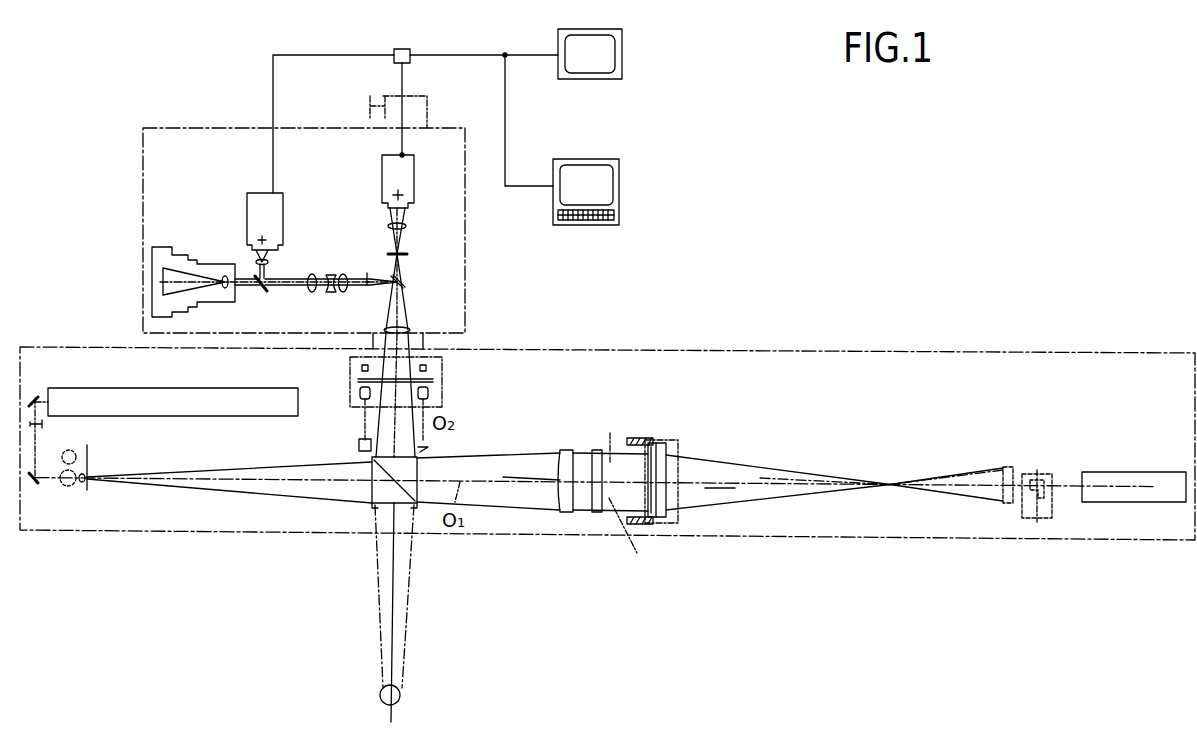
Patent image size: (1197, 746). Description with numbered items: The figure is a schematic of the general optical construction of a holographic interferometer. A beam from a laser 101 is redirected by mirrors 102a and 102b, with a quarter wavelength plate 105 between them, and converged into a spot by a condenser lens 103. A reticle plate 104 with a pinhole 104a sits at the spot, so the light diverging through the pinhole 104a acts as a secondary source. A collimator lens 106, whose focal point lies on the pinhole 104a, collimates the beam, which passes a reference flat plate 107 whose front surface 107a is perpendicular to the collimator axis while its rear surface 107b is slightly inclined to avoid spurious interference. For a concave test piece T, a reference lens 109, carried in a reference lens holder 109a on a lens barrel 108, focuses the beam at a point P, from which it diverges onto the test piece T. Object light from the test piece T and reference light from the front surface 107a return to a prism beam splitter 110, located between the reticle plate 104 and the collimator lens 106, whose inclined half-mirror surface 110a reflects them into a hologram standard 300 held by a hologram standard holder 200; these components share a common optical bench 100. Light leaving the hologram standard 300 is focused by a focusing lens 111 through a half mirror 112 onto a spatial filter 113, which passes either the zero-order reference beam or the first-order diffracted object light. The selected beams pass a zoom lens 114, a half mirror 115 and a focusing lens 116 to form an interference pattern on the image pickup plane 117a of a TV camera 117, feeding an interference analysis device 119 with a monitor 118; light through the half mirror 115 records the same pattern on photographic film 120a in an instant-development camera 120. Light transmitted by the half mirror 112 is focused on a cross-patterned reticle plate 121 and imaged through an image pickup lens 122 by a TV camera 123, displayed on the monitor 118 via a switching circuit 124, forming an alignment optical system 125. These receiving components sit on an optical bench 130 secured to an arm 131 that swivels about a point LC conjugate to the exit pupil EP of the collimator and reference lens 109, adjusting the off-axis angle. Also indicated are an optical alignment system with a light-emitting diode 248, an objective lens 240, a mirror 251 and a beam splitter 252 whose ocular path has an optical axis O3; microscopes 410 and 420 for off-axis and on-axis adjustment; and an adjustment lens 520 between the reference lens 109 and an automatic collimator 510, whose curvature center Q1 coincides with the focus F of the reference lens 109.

The optical bench 100 is at (629, 349).
The laser 101 is at (240, 388).
The mirror 102a is at (36, 396).
The mirror 102b is at (38, 490).
The condenser lens 103 is at (80, 486).
The reticle plate 104 is at (89, 455).
The pinhole 104a is at (90, 477).
The quarter wavelength plate 105 is at (43, 425).
The collimator lens 106 is at (565, 513).
The reference flat plate 107 is at (597, 513).
The front surface 107a is at (568, 450).
The rear surface 107b is at (619, 435).
The lens barrel 108 is at (640, 438).
The reference lens 109 is at (658, 520).
The reference lens holder 109a is at (660, 440).
The prism beam splitter 110 is at (376, 507).
The half-mirror surface 110a is at (412, 505).
The focusing lens 111 is at (407, 328).
The half mirror 112 is at (404, 285).
The spatial filter 113 is at (367, 290).
The zoom lens 114 is at (330, 272).
The half mirror 115 is at (264, 292).
The focusing lens 116 is at (268, 262).
The TV camera 117 is at (283, 214).
The image pickup plane 117a is at (270, 240).
The monitor 118 is at (595, 68).
The interference analysis device 119 is at (586, 168).
The instant-development type camera 120 is at (208, 298).
The photographic film 120a is at (170, 262).
The reticle plate 121 is at (406, 254).
The image pickup lens 122 is at (404, 226).
The TV camera 123 is at (414, 182).
The switching circuit 124 is at (407, 54).
The alignment optical system 125 is at (470, 224).
The optical bench 130 is at (178, 125).
The arm 131 is at (432, 84).
The hologram standard holder 200 is at (445, 393).
The objective lens 240 is at (358, 395).
The light-emitting diode 248 is at (360, 368).
The mirror 251 is at (426, 446).
The beam splitter 252 is at (359, 446).
The hologram standard 300 is at (435, 380).
The microscope 410 is at (78, 453).
The microscope 420 is at (72, 490).
The automatic collimator 510 is at (1143, 503).
The adjustment lens 520 is at (1033, 520).
The point LC is at (400, 692).
The exit pupil EP is at (627, 540).
The focus F is at (888, 488).
The point P is at (890, 481).
The curvature center Q1 is at (895, 487).
The optical axis O3 is at (710, 490).
The test piece T is at (1007, 466).